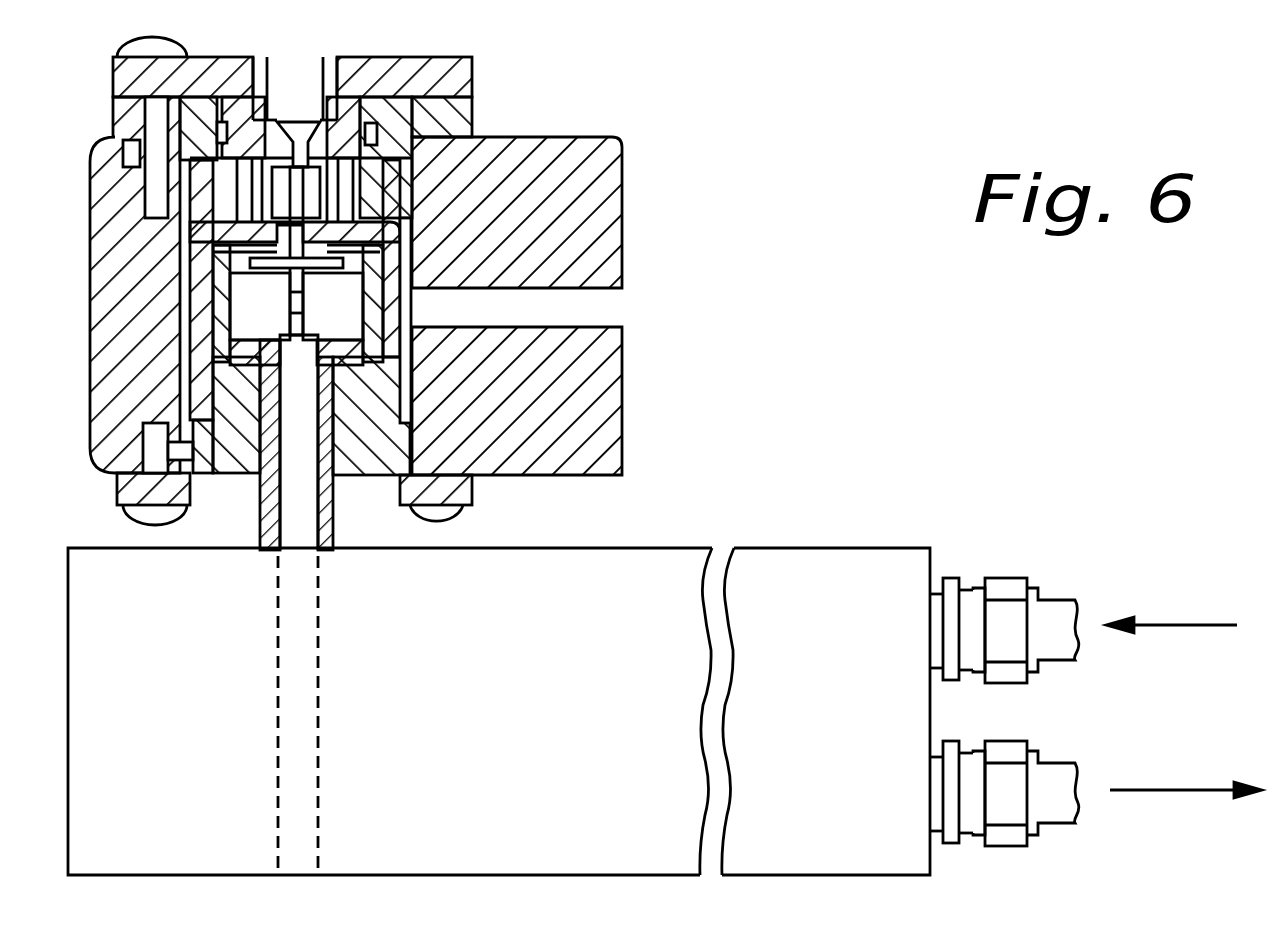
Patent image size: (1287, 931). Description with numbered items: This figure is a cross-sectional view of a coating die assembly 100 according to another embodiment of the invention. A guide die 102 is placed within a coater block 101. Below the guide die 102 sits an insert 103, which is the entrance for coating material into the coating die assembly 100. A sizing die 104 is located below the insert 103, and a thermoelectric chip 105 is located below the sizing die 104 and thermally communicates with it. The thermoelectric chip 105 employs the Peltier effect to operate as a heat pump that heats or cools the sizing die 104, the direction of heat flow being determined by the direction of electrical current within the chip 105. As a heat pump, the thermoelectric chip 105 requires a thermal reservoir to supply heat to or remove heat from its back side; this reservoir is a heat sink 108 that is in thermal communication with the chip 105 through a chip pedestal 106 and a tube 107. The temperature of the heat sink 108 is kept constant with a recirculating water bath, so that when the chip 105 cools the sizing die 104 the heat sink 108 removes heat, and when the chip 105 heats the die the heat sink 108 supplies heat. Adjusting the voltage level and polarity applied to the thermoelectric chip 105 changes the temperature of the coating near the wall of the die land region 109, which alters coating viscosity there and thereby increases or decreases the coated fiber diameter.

The coating die assembly 100 is at (781, 95).
The coater block 101 is at (598, 137).
The guide die 102 is at (322, 138).
The insert 103 is at (312, 182).
The sizing die 104 is at (270, 246).
The thermoelectric chip 105 is at (255, 263).
The chip pedestal 106 is at (310, 305).
The tube 107 is at (345, 485).
The heat sink 108 is at (560, 709).
The die land region 109 is at (385, 248).